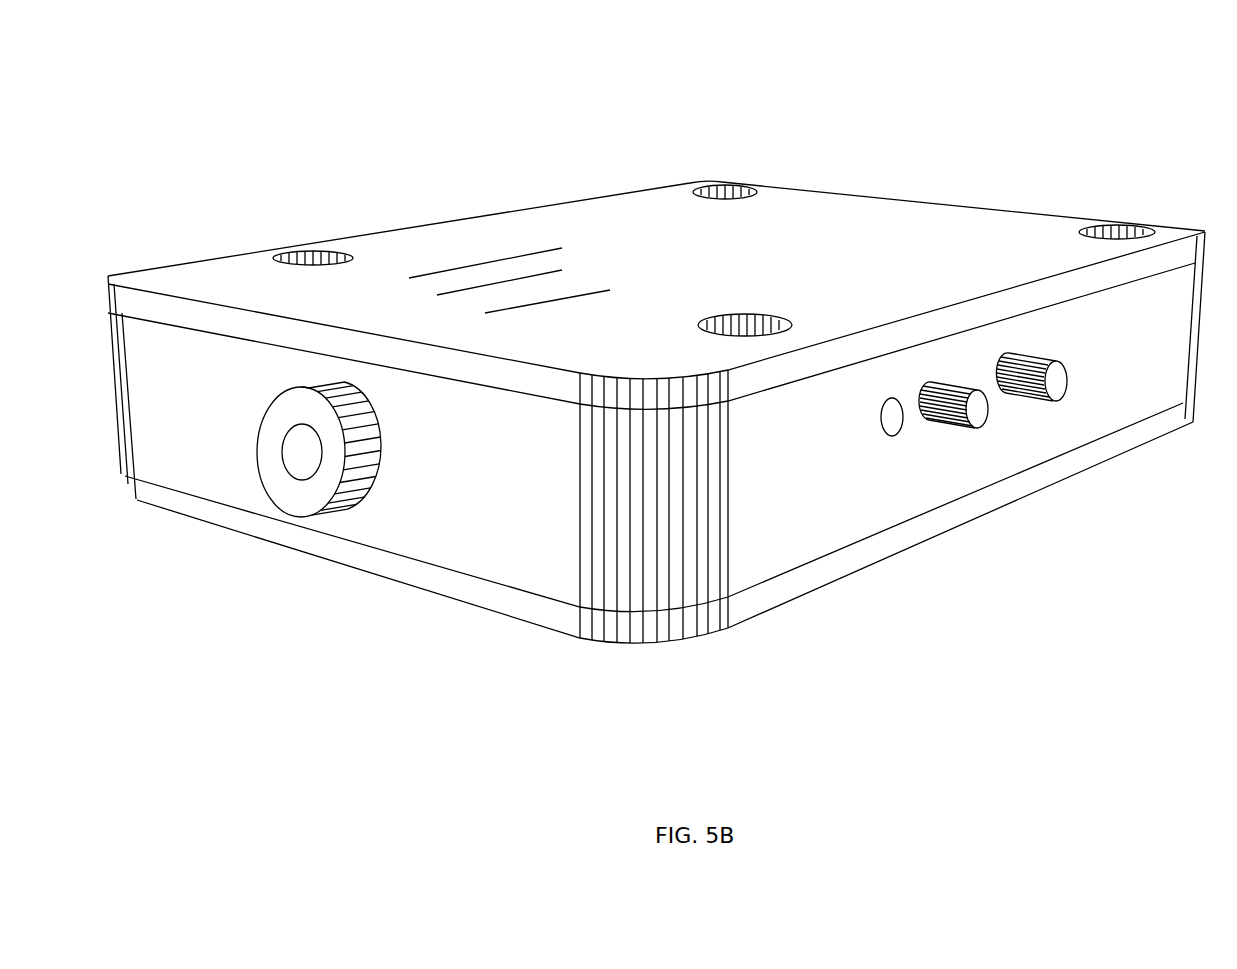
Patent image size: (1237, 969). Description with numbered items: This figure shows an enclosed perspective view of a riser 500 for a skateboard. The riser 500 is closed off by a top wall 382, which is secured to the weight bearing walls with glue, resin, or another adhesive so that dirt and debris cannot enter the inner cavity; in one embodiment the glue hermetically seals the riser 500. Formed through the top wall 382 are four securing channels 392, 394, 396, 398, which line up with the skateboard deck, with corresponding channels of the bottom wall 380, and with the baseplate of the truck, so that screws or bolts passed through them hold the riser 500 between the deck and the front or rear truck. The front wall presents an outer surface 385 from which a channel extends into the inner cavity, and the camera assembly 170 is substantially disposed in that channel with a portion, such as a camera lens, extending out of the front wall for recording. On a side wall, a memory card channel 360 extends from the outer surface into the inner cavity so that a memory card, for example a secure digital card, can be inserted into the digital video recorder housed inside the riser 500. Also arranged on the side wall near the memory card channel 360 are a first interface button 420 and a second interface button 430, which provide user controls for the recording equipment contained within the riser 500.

The riser 500 is at (722, 61).
The top wall 382 is at (822, 227).
The securing channel 392 is at (327, 254).
The securing channel 394 is at (735, 188).
The securing channel 396 is at (1123, 231).
The securing channel 398 is at (745, 318).
The outer surface 385 is at (482, 513).
The bottom wall 380 is at (372, 552).
The camera assembly 170 is at (278, 473).
The memory card channel 360 is at (892, 420).
The first interface button 420 is at (978, 411).
The second interface button 430 is at (1058, 381).